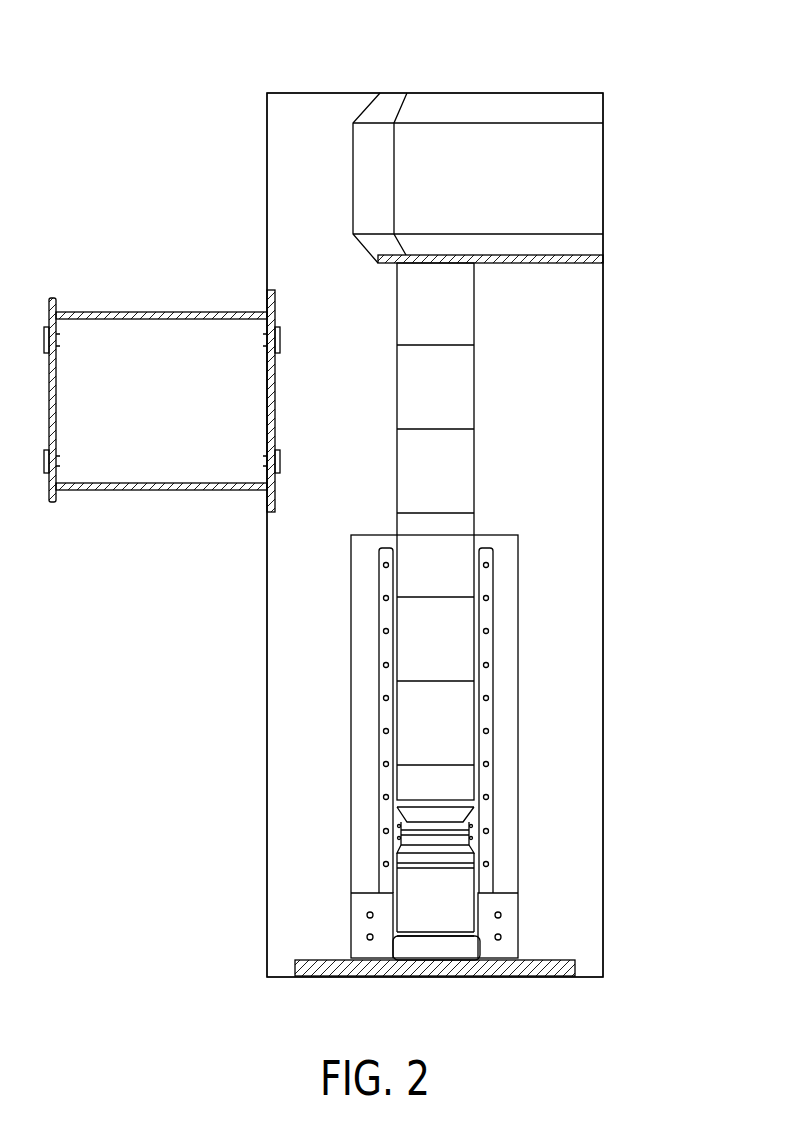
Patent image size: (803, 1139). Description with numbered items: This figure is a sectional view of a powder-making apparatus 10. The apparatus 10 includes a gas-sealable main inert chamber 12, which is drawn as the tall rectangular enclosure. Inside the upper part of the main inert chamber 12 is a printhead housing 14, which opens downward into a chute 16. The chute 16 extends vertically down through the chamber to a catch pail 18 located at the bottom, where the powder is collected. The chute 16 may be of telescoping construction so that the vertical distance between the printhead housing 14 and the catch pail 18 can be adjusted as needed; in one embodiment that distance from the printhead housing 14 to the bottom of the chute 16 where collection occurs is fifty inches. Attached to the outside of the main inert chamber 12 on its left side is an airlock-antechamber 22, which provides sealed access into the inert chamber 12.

The powder-making apparatus 10 is at (695, 85).
The main inert chamber 12 is at (603, 468).
The printhead housing 14 is at (573, 173).
The chute 16 is at (475, 442).
The catch pail 18 is at (488, 862).
The airlock-antechamber 22 is at (153, 313).